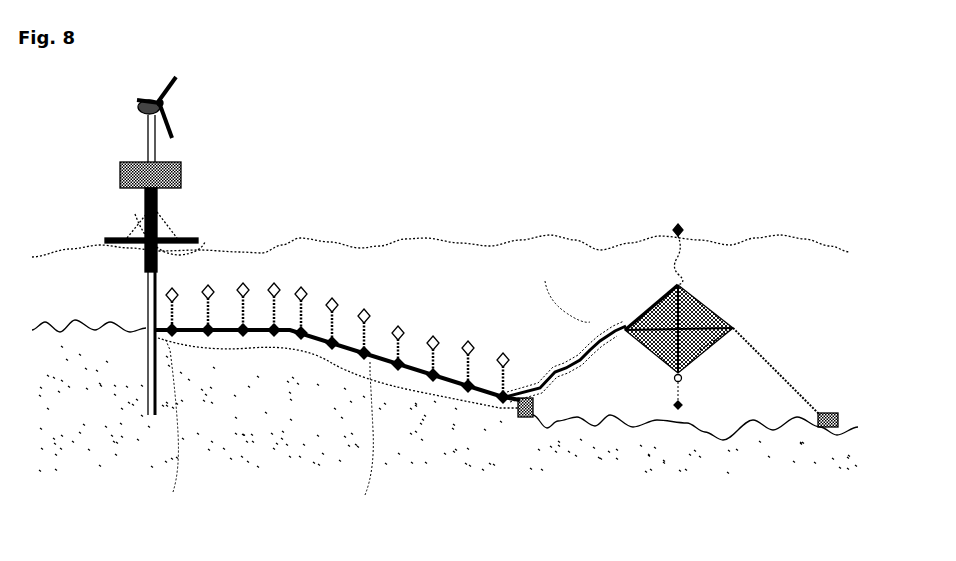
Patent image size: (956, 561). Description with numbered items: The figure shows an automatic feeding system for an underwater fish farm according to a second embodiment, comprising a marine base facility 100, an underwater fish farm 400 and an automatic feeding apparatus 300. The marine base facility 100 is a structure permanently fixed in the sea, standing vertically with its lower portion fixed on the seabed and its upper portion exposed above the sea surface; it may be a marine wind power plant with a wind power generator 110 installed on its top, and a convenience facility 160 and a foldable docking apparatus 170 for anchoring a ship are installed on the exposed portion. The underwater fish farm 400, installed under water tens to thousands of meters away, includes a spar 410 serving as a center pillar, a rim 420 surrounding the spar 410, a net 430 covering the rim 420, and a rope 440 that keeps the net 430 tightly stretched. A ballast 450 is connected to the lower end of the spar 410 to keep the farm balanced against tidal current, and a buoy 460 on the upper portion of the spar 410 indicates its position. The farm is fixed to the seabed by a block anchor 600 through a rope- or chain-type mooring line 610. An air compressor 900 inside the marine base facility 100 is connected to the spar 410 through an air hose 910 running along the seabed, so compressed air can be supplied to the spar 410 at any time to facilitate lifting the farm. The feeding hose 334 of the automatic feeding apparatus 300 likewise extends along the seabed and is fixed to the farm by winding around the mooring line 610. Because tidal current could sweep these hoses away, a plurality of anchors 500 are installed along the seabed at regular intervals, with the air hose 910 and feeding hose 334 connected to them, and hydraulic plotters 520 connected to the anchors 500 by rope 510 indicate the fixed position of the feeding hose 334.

The marine base facility 100 is at (147, 130).
The wind power generator 110 is at (178, 80).
The convenience facility 160 is at (119, 180).
The docking apparatus 170 is at (105, 240).
The automatic feeding apparatus 300 is at (140, 216).
The feeding hose 334 is at (620, 329).
The underwater fish farm 400 is at (650, 280).
The spar 410 is at (683, 378).
The rim 420 is at (736, 327).
The net 430 is at (712, 345).
The rope 440 is at (655, 360).
The ballast 450 is at (683, 405).
The buoy 460 is at (677, 224).
The anchors 500 is at (400, 362).
The rope 510 is at (505, 380).
The hydraulic plotters 520 is at (468, 341).
The block anchor 600 is at (826, 412).
The mooring line 610 is at (773, 362).
The air compressor 900 is at (148, 268).
The air hose 910 is at (373, 390).